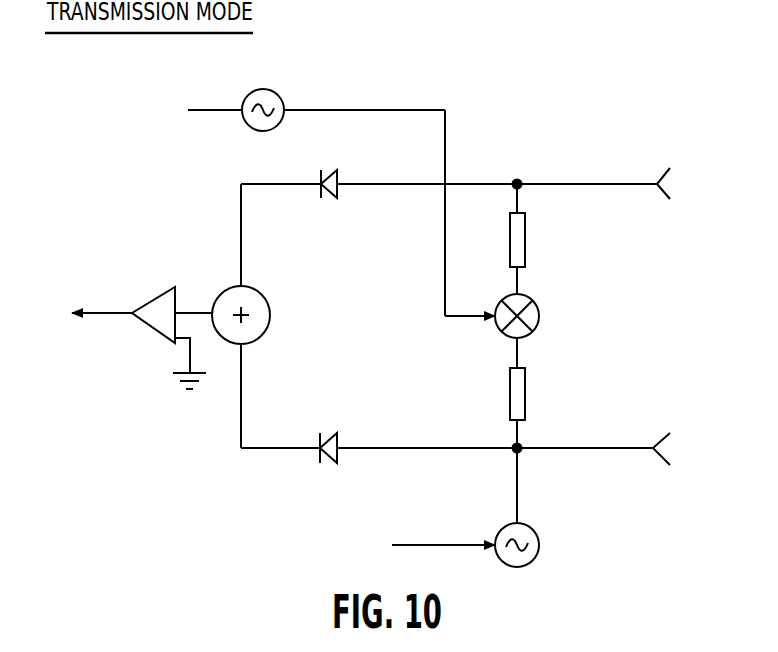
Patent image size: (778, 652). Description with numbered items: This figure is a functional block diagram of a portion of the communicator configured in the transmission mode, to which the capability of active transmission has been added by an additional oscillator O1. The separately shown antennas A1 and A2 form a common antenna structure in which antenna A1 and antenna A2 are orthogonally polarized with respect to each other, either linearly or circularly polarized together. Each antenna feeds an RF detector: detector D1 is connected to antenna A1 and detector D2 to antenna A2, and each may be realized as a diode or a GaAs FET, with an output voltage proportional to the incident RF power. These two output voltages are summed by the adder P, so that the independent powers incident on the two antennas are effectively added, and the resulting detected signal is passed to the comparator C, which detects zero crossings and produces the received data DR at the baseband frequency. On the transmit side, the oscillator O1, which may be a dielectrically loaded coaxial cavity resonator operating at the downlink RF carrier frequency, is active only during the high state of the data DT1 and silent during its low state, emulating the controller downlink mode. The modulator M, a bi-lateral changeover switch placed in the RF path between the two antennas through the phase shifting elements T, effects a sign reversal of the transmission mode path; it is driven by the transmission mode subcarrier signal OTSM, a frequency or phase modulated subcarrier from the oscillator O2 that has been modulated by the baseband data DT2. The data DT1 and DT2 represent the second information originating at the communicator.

The baseband data DT2 is at (191, 112).
The oscillator O2 is at (275, 128).
The transmission mode subcarrier signal OTSM is at (456, 189).
The RF detector D2 is at (329, 204).
The antenna A2 is at (693, 189).
The 45 degree transmission line T is at (544, 316).
The modulator M is at (531, 316).
The antenna A1 is at (690, 431).
The RF detector D1 is at (331, 467).
The data DT1 is at (418, 547).
The oscillator O1 is at (527, 567).
The adder P is at (268, 303).
The comparator C is at (172, 338).
The received data DR is at (80, 308).